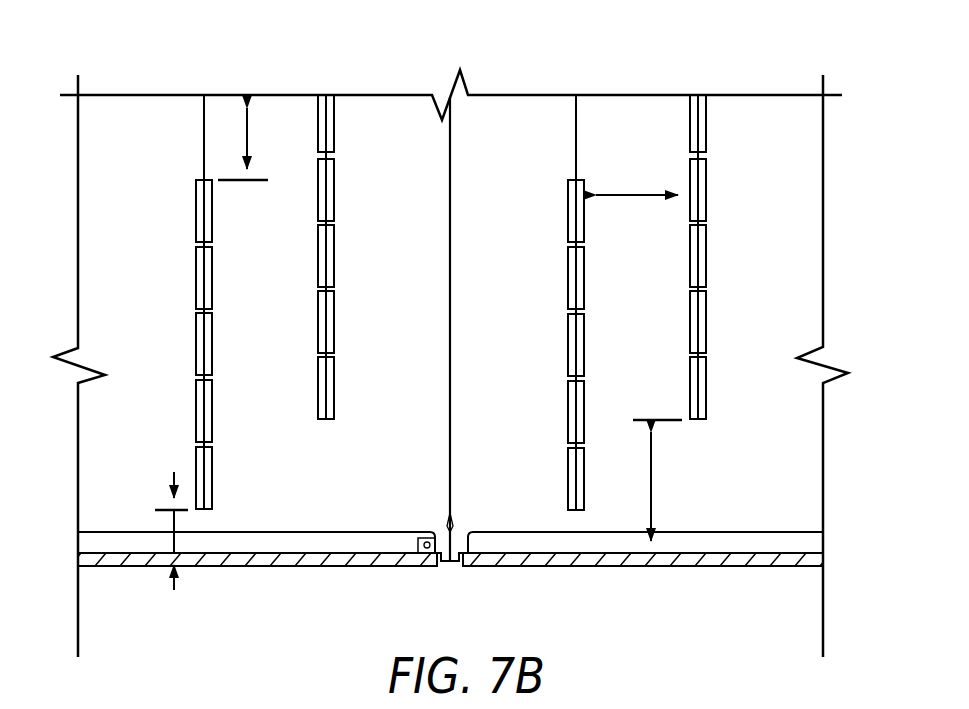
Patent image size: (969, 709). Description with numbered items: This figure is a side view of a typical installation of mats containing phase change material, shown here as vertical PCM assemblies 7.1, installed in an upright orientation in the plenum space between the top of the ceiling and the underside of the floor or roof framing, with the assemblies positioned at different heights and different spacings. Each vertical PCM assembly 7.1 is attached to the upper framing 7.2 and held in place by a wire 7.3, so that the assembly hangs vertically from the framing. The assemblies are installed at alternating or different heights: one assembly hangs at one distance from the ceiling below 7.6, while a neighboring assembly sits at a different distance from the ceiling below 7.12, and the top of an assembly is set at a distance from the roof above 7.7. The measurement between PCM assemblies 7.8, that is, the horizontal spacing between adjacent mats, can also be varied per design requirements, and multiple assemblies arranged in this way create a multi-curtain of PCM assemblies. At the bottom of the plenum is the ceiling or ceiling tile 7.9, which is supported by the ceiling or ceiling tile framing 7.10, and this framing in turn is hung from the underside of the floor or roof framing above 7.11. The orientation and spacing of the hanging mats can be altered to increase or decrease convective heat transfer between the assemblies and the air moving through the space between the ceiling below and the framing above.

The vertical PCM assembly 7.1 is at (588, 485).
The upper framing 7.2 is at (181, 100).
The wire 7.3 is at (571, 108).
The distance from ceiling below 7.6 is at (654, 503).
The distance from roof above 7.7 is at (247, 135).
The measurement between PCM assemblies 7.8 is at (637, 194).
The ceiling or ceiling tile 7.9 is at (368, 578).
The ceiling or ceiling tile framing 7.10 is at (243, 547).
The underside of floor or roof framing above 7.11 is at (457, 502).
The distance from ceiling below 7.12 is at (174, 588).